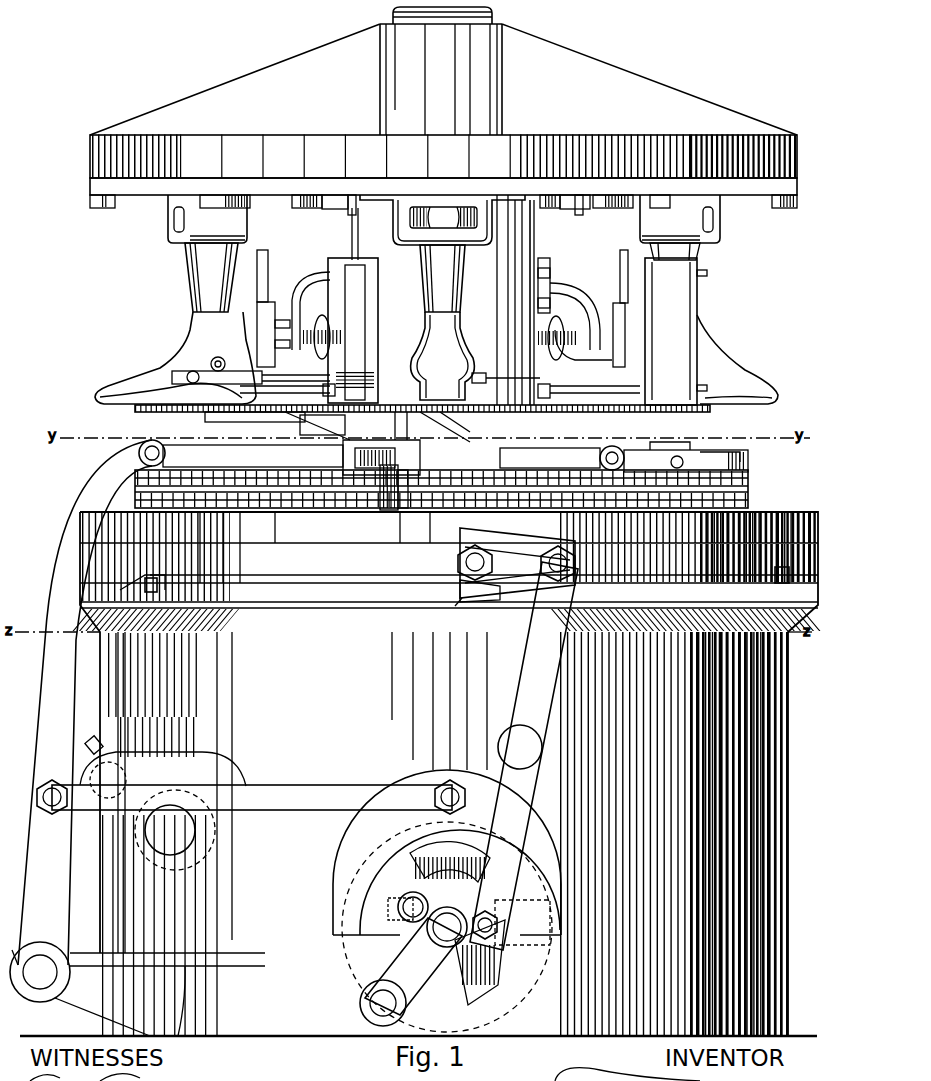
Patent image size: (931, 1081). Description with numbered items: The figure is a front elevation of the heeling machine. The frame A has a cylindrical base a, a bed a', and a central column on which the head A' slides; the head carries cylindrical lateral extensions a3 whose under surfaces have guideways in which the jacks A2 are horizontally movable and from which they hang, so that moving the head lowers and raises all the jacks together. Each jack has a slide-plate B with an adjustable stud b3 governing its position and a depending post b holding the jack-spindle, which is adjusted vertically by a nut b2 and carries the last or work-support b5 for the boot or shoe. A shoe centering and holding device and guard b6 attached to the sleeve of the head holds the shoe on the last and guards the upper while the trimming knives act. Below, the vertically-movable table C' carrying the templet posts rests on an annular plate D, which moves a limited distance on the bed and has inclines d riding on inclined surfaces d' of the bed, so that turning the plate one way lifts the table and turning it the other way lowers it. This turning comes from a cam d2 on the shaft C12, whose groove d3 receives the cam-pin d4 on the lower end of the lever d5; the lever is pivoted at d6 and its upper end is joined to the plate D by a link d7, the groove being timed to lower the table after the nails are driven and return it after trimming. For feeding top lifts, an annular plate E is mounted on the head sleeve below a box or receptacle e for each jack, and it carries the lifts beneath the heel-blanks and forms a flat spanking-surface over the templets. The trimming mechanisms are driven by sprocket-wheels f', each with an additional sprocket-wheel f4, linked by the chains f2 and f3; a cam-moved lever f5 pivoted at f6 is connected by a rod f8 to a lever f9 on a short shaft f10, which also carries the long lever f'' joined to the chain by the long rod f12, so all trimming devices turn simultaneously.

The lateral extensions a3 is at (253, 140).
The slide-plate B is at (140, 197).
The jacks A2 is at (230, 233).
The nut b2 is at (455, 210).
The adjustable stud b3 is at (573, 211).
The head A' is at (443, 300).
The post b is at (195, 271).
The last or work-support b5 is at (182, 372).
The shoe centering and holding device and guard b6 is at (490, 386).
The box or receptacle e is at (711, 331).
The annular plate E is at (712, 410).
The long rod f12 is at (212, 455).
The sprocket-wheel f' is at (632, 457).
The chain f3 is at (750, 486).
The chain f2 is at (372, 500).
The additional sprocket-wheel f4 is at (763, 495).
The frame A is at (419, 774).
The cylindrical base a is at (174, 797).
The bed a' is at (357, 614).
The vertically-movable table C' is at (278, 524).
The annular plate D is at (484, 563).
The inclines d is at (454, 575).
The inclined surfaces d' is at (355, 574).
The link d7 is at (500, 545).
The lever d5 is at (524, 756).
The pivot d6 is at (510, 747).
The rod f8 is at (305, 810).
The cam d2 is at (447, 901).
The shaft C12 is at (480, 960).
The cam-pin d4 is at (500, 935).
The cam-groove d3 is at (480, 962).
The lever f5 is at (413, 966).
The pivot f6 is at (375, 1000).
The lever f9 is at (46, 873).
The long lever f'' is at (52, 706).
The short shaft f10 is at (50, 975).